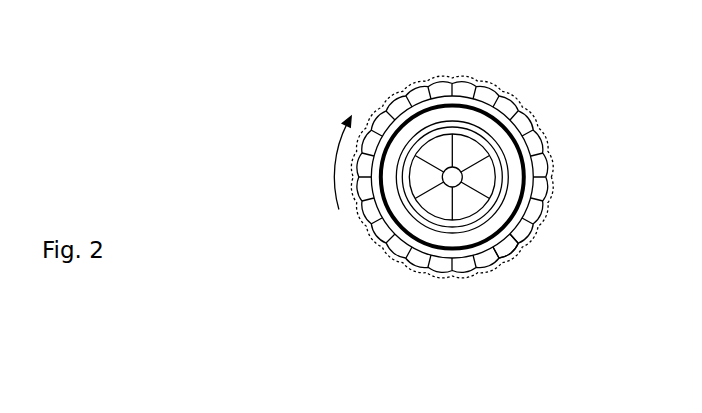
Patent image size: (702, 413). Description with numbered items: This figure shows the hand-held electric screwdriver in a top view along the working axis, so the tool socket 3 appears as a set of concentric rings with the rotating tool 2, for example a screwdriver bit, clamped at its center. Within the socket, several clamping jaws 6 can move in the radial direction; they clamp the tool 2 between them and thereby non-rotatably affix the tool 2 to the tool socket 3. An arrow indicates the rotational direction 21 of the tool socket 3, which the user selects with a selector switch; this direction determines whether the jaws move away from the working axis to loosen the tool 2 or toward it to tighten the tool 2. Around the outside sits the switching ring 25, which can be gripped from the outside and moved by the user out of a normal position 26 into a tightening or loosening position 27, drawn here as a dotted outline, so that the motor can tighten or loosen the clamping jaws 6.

The rotating tool 2 is at (452, 178).
The tool socket 3 is at (463, 206).
The clamping jaws 6 is at (438, 233).
The rotational direction 21 is at (333, 160).
The switching ring 25 is at (505, 250).
The normal position 26 is at (450, 73).
The tightening or loosening position 27 is at (503, 83).